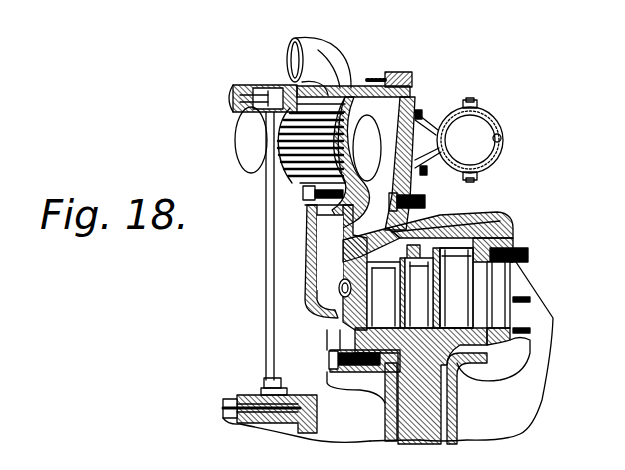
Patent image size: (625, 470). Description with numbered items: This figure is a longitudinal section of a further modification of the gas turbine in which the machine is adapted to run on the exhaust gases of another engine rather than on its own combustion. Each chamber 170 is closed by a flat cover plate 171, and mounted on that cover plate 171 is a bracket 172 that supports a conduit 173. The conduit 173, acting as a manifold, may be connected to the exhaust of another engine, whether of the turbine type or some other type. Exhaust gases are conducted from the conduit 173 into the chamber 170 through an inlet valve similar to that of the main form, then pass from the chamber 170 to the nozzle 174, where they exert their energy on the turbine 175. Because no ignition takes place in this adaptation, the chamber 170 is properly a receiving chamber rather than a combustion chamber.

The chamber 170 is at (380, 108).
The flat cover plate 171 is at (418, 86).
The bracket 172 is at (503, 128).
The conduit 173 is at (505, 146).
The nozzle 174 is at (336, 292).
The turbine 175 is at (460, 288).